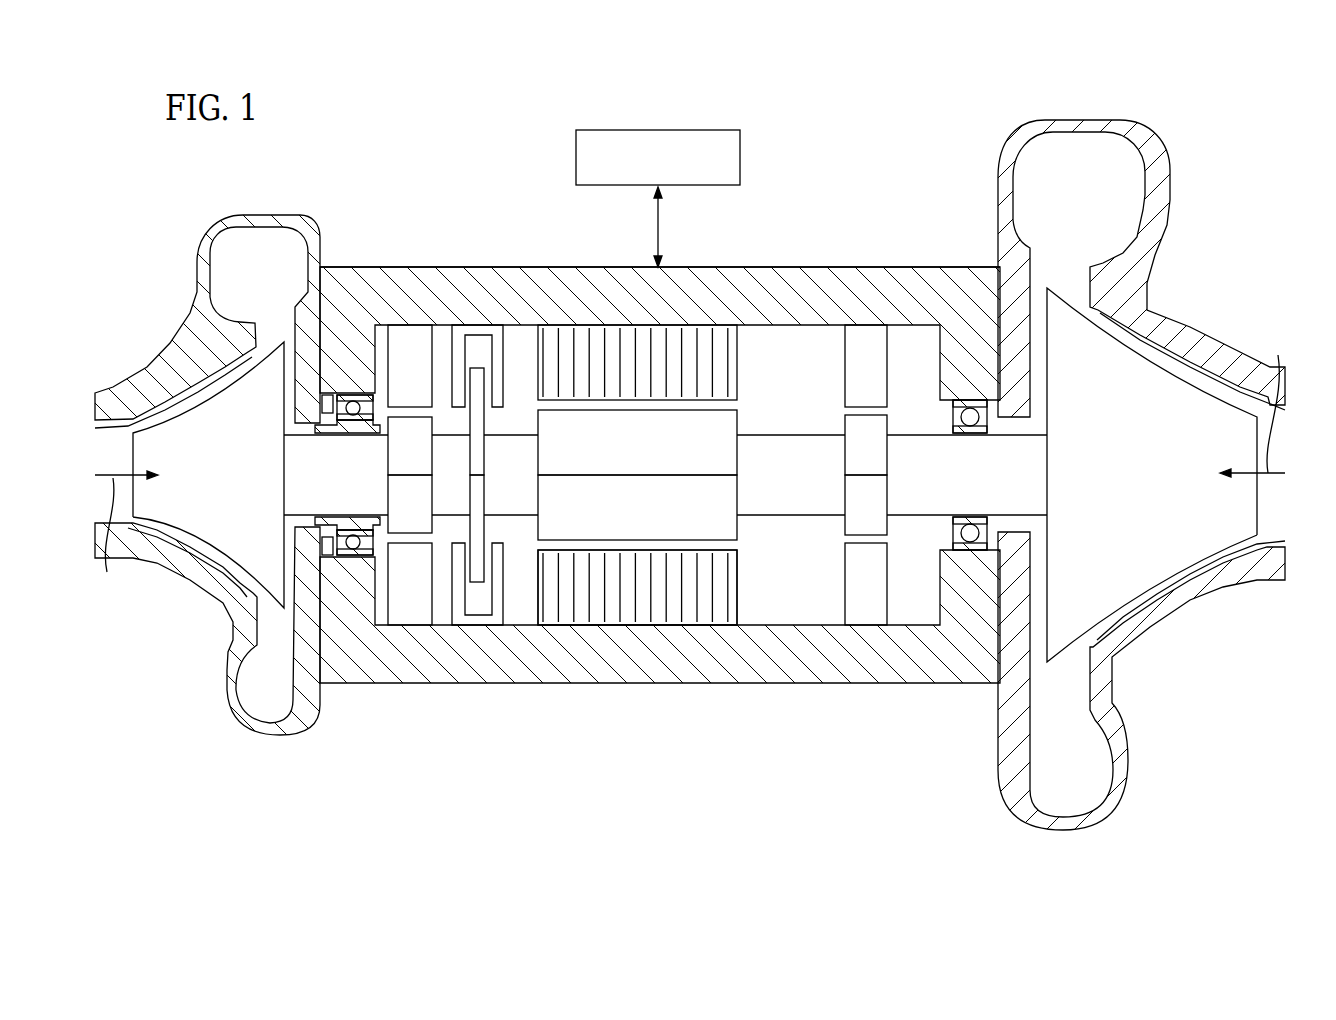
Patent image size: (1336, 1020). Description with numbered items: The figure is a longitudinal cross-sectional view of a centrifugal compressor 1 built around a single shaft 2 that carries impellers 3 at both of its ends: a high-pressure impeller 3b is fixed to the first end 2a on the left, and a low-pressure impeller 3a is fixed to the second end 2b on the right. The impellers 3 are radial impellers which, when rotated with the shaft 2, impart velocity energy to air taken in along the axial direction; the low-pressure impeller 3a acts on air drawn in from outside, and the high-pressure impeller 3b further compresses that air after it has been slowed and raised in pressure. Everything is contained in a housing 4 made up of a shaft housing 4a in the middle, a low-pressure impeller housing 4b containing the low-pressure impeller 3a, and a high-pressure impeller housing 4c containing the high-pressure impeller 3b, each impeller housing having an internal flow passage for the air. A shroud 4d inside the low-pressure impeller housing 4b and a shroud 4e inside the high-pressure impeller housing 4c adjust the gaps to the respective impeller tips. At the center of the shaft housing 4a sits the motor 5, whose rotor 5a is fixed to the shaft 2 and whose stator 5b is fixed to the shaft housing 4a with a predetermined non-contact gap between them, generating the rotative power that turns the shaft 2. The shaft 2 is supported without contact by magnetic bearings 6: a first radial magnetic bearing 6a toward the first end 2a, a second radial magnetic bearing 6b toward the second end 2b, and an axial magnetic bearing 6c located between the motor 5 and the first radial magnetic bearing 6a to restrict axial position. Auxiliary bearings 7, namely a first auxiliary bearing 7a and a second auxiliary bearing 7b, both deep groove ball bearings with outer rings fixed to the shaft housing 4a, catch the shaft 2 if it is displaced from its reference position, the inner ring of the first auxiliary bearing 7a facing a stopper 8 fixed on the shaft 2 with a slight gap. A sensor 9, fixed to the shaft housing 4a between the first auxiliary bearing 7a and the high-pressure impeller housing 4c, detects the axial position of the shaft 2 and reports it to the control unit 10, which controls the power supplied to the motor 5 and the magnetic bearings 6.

The centrifugal compressor 1 is at (1197, 122).
The shaft 2 is at (793, 447).
The first end 2a is at (285, 493).
The second end 2b is at (1048, 485).
The impellers 3 is at (703, 475).
The low-pressure impeller 3a is at (1170, 547).
The high-pressure impeller 3b is at (180, 517).
The housing 4 is at (757, 253).
The shaft housing 4a is at (711, 267).
The low-pressure impeller housing 4b is at (1165, 213).
The high-pressure impeller housing 4c is at (160, 390).
The shroud 4d is at (1184, 360).
The shroud 4e is at (197, 342).
The motor 5 is at (575, 303).
The rotor 5a is at (732, 530).
The stator 5b is at (724, 593).
The magnetic bearings 6 is at (644, 390).
The first radial magnetic bearing 6a is at (409, 345).
The second radial magnetic bearing 6b is at (855, 311).
The axial magnetic bearing 6c is at (485, 318).
The auxiliary bearings 7 is at (659, 377).
The first auxiliary bearing 7a is at (360, 393).
The second auxiliary bearing 7b is at (965, 398).
The stopper 8 is at (350, 448).
The sensor 9 is at (322, 405).
The control unit 10 is at (714, 128).